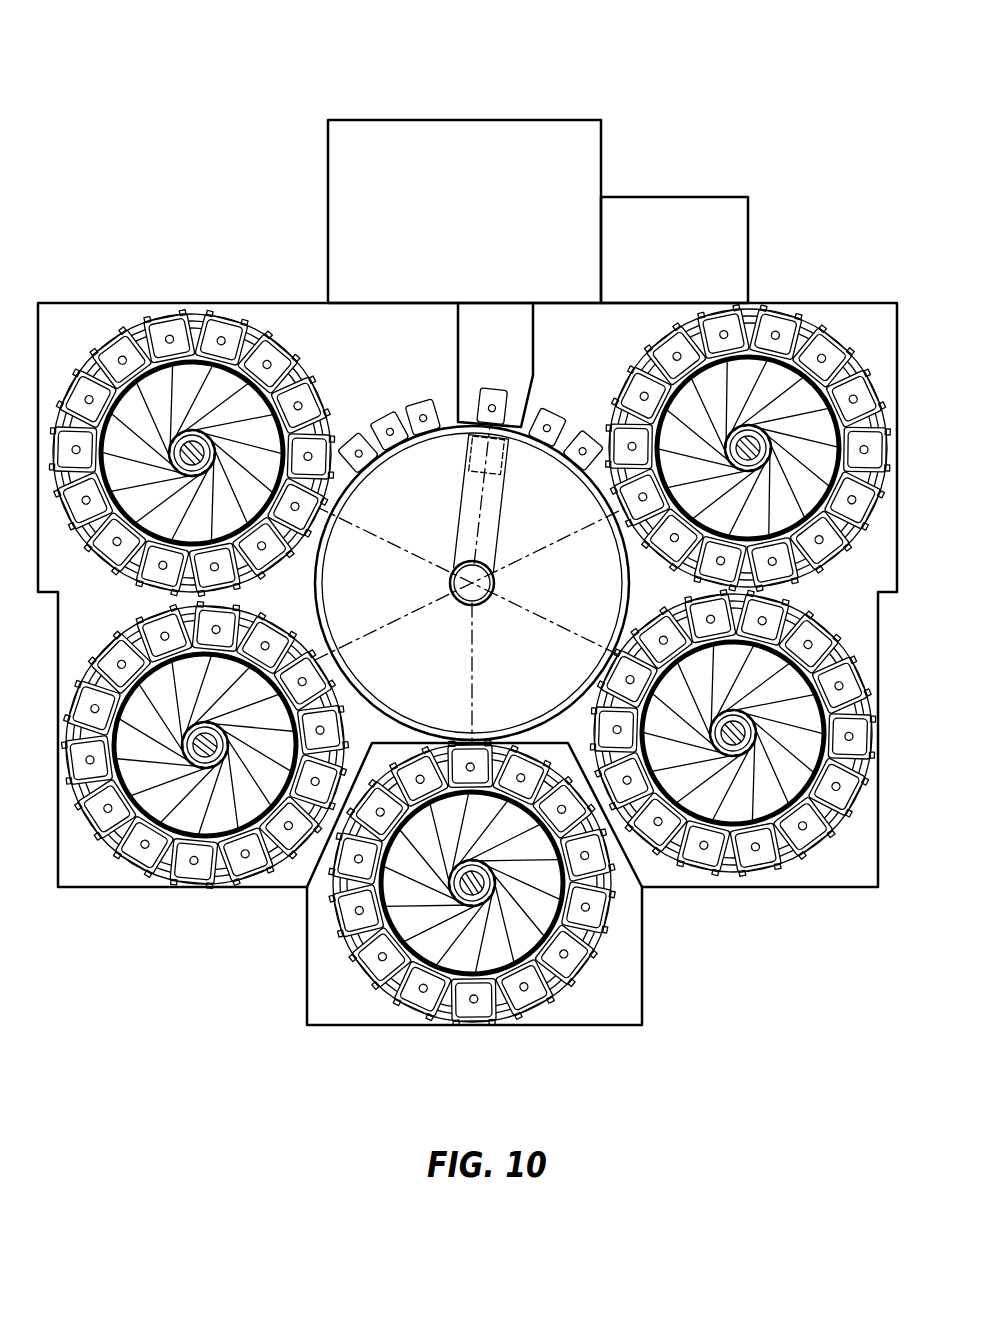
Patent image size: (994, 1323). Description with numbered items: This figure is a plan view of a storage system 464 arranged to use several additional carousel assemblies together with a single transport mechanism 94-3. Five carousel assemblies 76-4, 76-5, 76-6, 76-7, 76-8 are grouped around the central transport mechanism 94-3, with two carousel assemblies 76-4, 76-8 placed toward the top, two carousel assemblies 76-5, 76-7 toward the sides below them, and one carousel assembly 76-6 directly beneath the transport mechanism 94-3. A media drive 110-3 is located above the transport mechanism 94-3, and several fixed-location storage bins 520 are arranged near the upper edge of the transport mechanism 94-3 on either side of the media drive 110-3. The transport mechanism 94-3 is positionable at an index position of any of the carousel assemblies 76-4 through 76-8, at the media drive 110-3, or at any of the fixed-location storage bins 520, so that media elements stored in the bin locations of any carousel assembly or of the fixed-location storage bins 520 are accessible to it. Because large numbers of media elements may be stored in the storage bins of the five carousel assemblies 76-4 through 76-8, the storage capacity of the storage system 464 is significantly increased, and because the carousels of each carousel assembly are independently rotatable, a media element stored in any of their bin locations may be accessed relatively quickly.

The storage system 464 is at (535, 82).
The transport mechanism 94-3 is at (468, 594).
The media drive 110-3 is at (495, 389).
The fixed-location storage bins 520 is at (422, 400).
The carousel assembly 76-4 is at (90, 368).
The carousel assembly 76-5 is at (222, 885).
The carousel assembly 76-6 is at (352, 950).
The carousel assembly 76-7 is at (770, 863).
The carousel assembly 76-8 is at (805, 348).